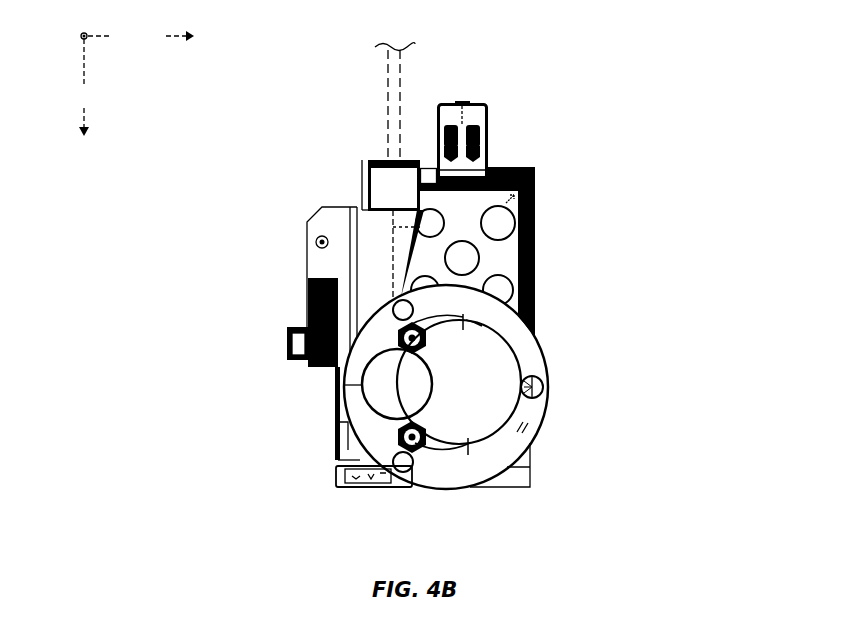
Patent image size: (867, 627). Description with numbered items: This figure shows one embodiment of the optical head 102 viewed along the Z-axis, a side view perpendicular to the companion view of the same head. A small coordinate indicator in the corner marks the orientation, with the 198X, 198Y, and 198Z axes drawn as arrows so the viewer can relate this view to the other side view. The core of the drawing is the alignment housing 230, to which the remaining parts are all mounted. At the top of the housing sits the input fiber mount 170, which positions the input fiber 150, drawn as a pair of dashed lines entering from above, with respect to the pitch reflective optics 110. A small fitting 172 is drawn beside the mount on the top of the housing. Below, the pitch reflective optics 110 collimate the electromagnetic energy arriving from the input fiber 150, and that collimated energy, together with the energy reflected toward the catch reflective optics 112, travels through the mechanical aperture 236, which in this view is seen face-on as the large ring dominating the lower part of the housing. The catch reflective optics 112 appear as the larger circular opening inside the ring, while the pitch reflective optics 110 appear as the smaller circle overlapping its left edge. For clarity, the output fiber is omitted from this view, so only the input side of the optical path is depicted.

The optical head 102 is at (656, 128).
The pitch reflective optics 110 is at (378, 416).
The catch reflective optics 112 is at (471, 445).
The input fiber 150 is at (388, 118).
The input fiber mount 170 is at (372, 158).
The fitting 172 is at (489, 121).
The alignment housing 230 is at (536, 227).
The mechanical aperture 236 is at (538, 341).
The X axis 198X is at (85, 87).
The Y axis 198Y is at (137, 36).
The Z axis 198Z is at (88, 38).